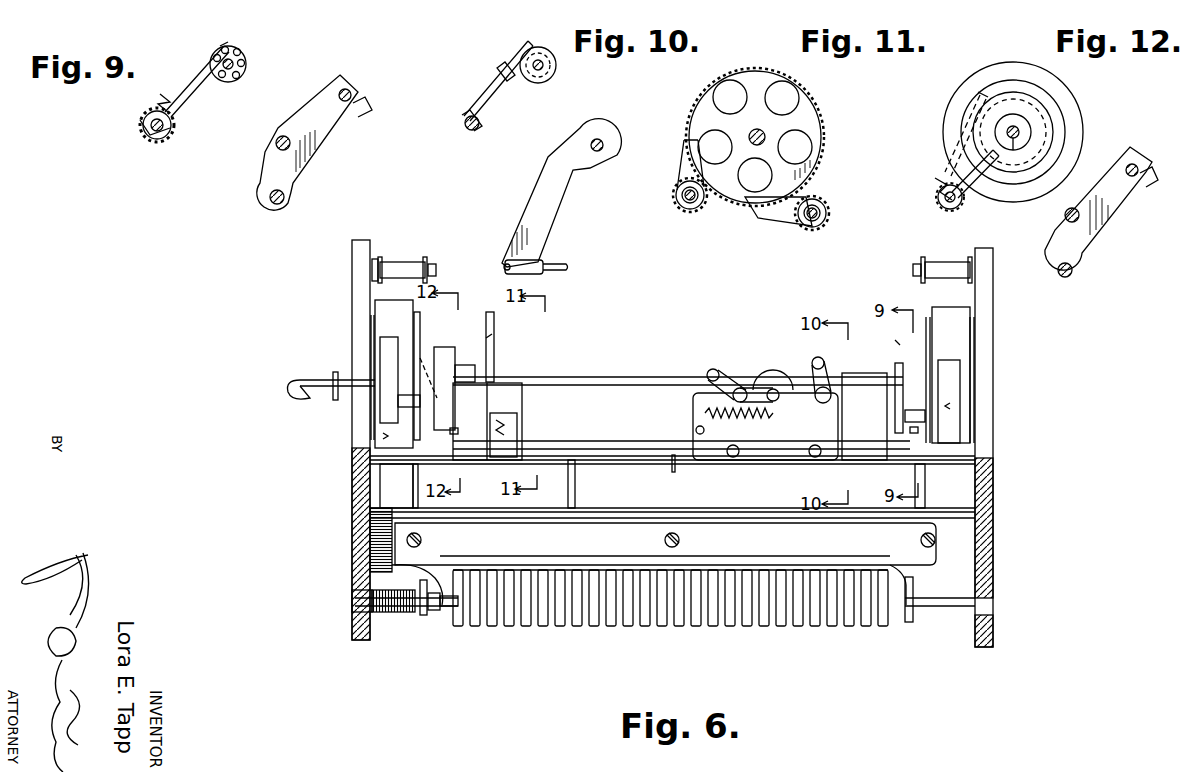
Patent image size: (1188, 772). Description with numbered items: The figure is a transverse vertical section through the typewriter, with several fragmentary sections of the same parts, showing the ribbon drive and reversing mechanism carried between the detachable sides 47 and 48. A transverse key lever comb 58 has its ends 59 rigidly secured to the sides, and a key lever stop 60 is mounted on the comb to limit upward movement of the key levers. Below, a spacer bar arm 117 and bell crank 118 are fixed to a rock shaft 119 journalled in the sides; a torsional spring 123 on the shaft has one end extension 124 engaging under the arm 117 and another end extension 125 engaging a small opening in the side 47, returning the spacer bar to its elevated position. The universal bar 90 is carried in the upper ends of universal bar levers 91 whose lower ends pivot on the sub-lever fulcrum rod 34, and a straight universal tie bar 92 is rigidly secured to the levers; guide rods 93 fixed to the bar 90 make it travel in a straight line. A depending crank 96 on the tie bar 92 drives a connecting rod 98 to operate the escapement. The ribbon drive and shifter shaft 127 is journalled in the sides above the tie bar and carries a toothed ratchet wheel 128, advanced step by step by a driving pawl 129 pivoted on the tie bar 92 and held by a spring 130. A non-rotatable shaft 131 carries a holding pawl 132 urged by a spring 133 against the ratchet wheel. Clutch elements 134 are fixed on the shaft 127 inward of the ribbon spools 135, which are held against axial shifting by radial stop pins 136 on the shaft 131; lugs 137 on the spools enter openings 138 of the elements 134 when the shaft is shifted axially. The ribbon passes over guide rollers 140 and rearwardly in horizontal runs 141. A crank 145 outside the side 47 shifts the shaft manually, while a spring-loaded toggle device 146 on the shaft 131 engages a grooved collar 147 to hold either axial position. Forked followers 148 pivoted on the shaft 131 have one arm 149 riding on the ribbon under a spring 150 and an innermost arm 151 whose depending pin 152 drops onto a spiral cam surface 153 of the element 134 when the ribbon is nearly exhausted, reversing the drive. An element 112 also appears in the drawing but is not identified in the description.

In FIG. 9, the sub-lever fulcrum rod 34 is at (277, 205).
In FIG. 12, the sub-lever fulcrum rod 34 is at (1080, 277).
In FIG. 6, the detachable typewriter side 47 is at (352, 497).
In FIG. 6, the detachable typewriter side 48 is at (996, 492).
In FIG. 6, the key lever comb 58 is at (727, 628).
In FIG. 6, the comb ends 59 is at (368, 537).
In FIG. 6, the key lever stop 60 is at (776, 568).
In FIG. 9, the universal bar 90 is at (348, 88).
In FIG. 12, the universal bar 90 is at (1138, 165).
In FIG. 9, the universal bar lever 91 is at (336, 130).
In FIG. 12, the universal bar lever 91 is at (1108, 208).
In FIG. 6, the universal bar lever 91 is at (413, 478).
In FIG. 9, the universal tie bar 92 is at (276, 141).
In FIG. 10, the universal tie bar 92 is at (600, 139).
In FIG. 11, the universal tie bar 92 is at (813, 234).
In FIG. 12, the universal tie bar 92 is at (1081, 220).
In FIG. 6, the universal tie bar 92 is at (618, 467).
In FIG. 9, the guide rod 93 is at (370, 105).
In FIG. 12, the guide rod 93 is at (1150, 188).
In FIG. 10, the depending crank 96 is at (553, 196).
In FIG. 6, the depending crank 96 is at (576, 494).
In FIG. 10, the connecting rod 98 is at (567, 260).
In FIG. 6, the pin 112 is at (672, 474).
In FIG. 6, the spacer bar arm 117 is at (434, 612).
In FIG. 6, the bell crank 118 is at (915, 582).
In FIG. 6, the rock shaft 119 is at (452, 607).
In FIG. 6, the torsional spring 123 is at (390, 613).
In FIG. 6, the spring end extension 124 is at (424, 618).
In FIG. 6, the spring end extension 125 is at (362, 590).
In FIG. 10, the ribbon drive and shifter shaft 127 is at (537, 84).
In FIG. 12, the ribbon drive and shifter shaft 127 is at (1030, 143).
In FIG. 6, the ribbon drive and shifter shaft 127 is at (605, 378).
In FIG. 11, the toothed ratchet wheel 128 is at (818, 123).
In FIG. 6, the toothed ratchet wheel 128 is at (495, 338).
In FIG. 11, the driving pawl 129 is at (772, 213).
In FIG. 11, the pawl spring 130 is at (826, 226).
In FIG. 9, the non-rotatable shaft 131 is at (155, 140).
In FIG. 10, the non-rotatable shaft 131 is at (476, 132).
In FIG. 11, the non-rotatable shaft 131 is at (680, 194).
In FIG. 12, the non-rotatable shaft 131 is at (958, 204).
In FIG. 6, the non-rotatable shaft 131 is at (616, 443).
In FIG. 11, the holding pawl 132 is at (684, 165).
In FIG. 6, the holding pawl 132 is at (522, 406).
In FIG. 11, the holding pawl spring 133 is at (692, 222).
In FIG. 6, the holding pawl spring 133 is at (517, 426).
In FIG. 9, the ribbon reversing clutch element 134 is at (247, 62).
In FIG. 12, the ribbon reversing clutch element 134 is at (1039, 132).
In FIG. 6, the ribbon reversing clutch element 134 is at (447, 350).
In FIG. 12, the ribbon spool 135 is at (1078, 141).
In FIG. 6, the ribbon spool 135 is at (372, 316).
In FIG. 12, the radial stop pin 136 is at (985, 180).
In FIG. 6, the radial stop pin 136 is at (412, 405).
In FIG. 6, the spool lug 137 is at (897, 400).
In FIG. 9, the clutch element opening 138 is at (238, 78).
In FIG. 6, the clutch element opening 138 is at (420, 358).
In FIG. 6, the guide roller 140 is at (396, 262).
In FIG. 6, the horizontal ribbon run 141 is at (378, 303).
In FIG. 6, the crank 145 is at (332, 378).
In FIG. 10, the spring-loaded toggle device 146 is at (484, 93).
In FIG. 6, the spring-loaded toggle device 146 is at (776, 388).
In FIG. 10, the grooved collar 147 is at (556, 72).
In FIG. 6, the grooved collar 147 is at (833, 378).
In FIG. 9, the forked follower 148 is at (160, 98).
In FIG. 12, the forked follower 148 is at (930, 184).
In FIG. 6, the forked follower 148 is at (386, 436).
In FIG. 6, the follower arm 149 is at (382, 340).
In FIG. 9, the follower spring 150 is at (174, 118).
In FIG. 12, the follower spring 150 is at (950, 175).
In FIG. 6, the follower spring 150 is at (452, 431).
In FIG. 9, the innermost follower arm 151 is at (195, 66).
In FIG. 12, the innermost follower arm 151 is at (955, 126).
In FIG. 6, the innermost follower arm 151 is at (457, 370).
In FIG. 9, the depending pin 152 is at (236, 42).
In FIG. 12, the depending pin 152 is at (965, 108).
In FIG. 6, the depending pin 152 is at (490, 338).
In FIG. 12, the spiral cam surface 153 is at (1012, 123).
In FIG. 6, the spiral cam surface 153 is at (432, 380).